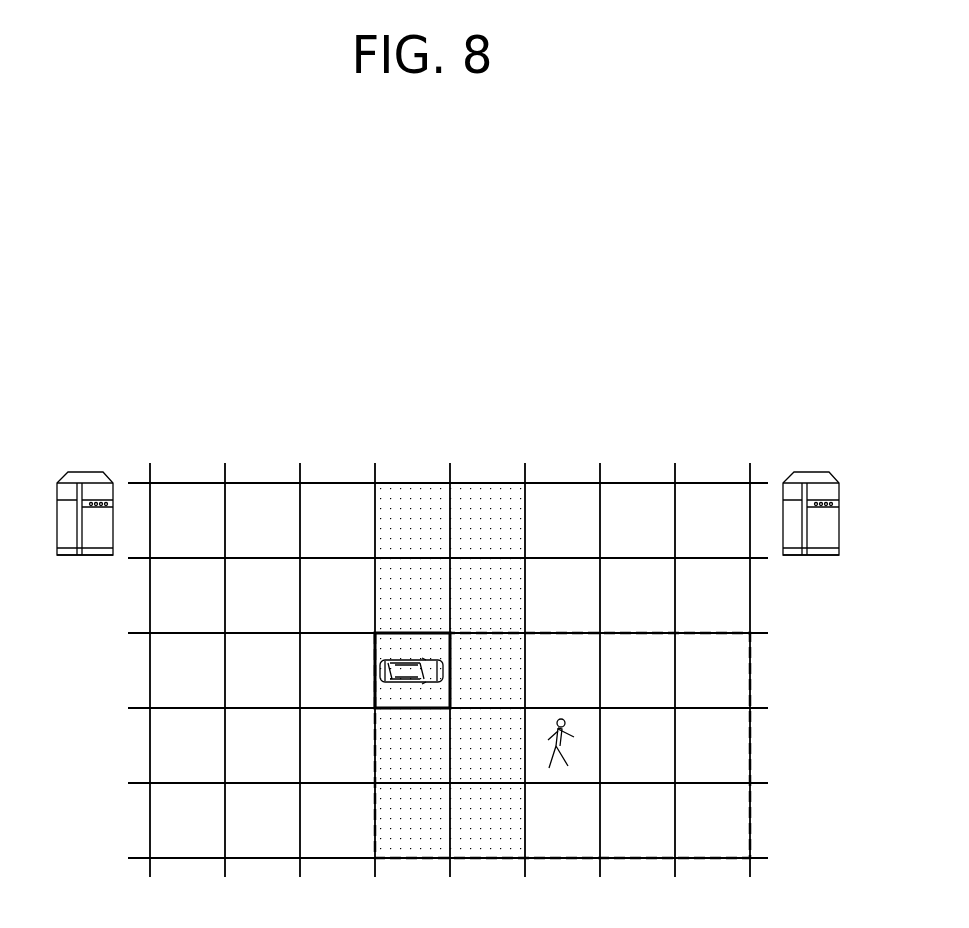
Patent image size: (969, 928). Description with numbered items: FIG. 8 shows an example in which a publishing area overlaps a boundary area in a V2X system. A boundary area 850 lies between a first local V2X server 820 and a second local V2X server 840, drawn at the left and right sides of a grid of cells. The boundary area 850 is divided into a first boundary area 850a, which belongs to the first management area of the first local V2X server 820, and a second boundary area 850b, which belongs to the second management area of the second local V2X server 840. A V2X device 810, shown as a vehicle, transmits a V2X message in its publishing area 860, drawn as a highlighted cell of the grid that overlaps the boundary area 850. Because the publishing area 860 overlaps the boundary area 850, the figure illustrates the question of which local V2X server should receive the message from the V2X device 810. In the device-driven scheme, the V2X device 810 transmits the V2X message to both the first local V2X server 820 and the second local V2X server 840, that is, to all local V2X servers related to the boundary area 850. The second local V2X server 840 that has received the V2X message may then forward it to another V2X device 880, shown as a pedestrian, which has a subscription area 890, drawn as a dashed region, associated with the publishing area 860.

The V2X device 810 is at (415, 683).
The first local V2X server 820 is at (83, 472).
The second local V2X server 840 is at (808, 472).
The boundary area 850 is at (377, 373).
The first boundary area 850a is at (450, 421).
The second boundary area 850b is at (450, 421).
The publishing area 860 is at (375, 647).
The V2X device 880 is at (575, 735).
The subscription area 890 is at (750, 677).